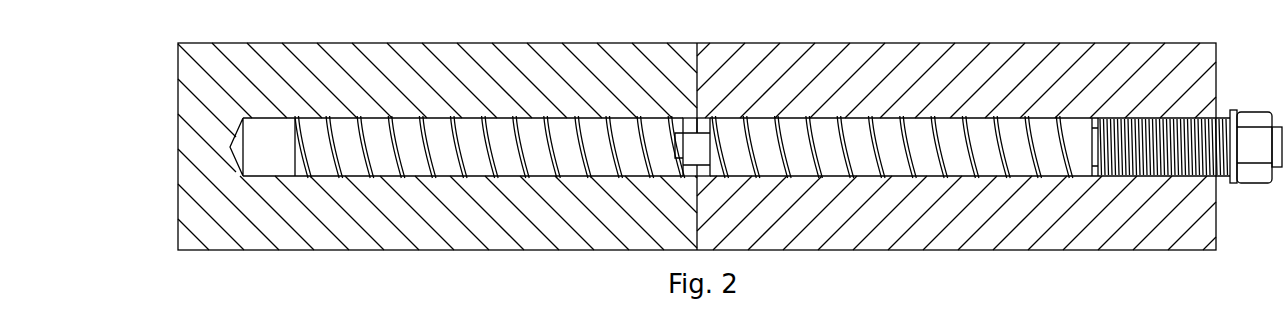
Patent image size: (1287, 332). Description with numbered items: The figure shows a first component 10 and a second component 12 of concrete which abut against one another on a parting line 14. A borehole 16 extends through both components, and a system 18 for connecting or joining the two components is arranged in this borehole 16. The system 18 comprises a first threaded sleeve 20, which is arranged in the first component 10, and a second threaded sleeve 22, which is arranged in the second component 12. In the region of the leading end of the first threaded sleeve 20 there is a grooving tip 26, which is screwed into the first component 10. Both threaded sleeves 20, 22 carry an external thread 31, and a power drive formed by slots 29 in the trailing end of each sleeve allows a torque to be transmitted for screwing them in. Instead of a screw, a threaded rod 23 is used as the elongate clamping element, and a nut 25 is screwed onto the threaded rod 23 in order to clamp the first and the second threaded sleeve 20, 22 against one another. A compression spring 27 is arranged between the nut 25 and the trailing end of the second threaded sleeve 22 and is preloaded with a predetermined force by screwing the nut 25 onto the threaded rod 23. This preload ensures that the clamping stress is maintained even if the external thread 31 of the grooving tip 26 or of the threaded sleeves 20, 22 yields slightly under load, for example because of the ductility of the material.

The first component 10 is at (190, 75).
The second component 12 is at (1210, 222).
The parting line 14 is at (700, 48).
The borehole 16 is at (258, 127).
The system 18 is at (635, 100).
The first threaded sleeve 20 is at (397, 113).
The second threaded sleeve 22 is at (878, 110).
The threaded rod 23 is at (697, 152).
The nut 25 is at (1250, 137).
The grooving tip 26 is at (330, 113).
The compression spring 27 is at (1130, 122).
The slots 29 is at (1102, 177).
The external thread 31 is at (480, 118).